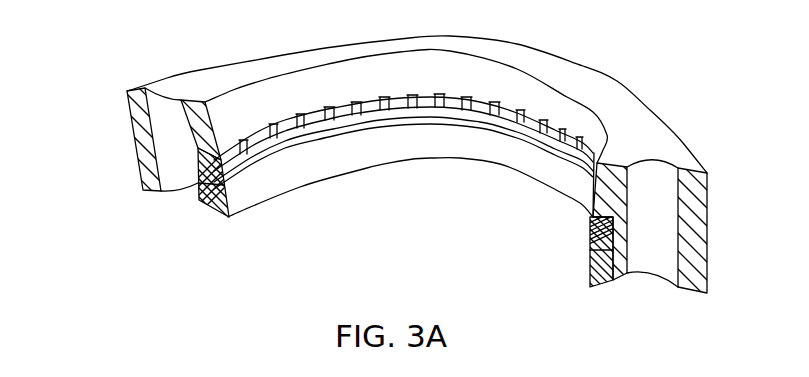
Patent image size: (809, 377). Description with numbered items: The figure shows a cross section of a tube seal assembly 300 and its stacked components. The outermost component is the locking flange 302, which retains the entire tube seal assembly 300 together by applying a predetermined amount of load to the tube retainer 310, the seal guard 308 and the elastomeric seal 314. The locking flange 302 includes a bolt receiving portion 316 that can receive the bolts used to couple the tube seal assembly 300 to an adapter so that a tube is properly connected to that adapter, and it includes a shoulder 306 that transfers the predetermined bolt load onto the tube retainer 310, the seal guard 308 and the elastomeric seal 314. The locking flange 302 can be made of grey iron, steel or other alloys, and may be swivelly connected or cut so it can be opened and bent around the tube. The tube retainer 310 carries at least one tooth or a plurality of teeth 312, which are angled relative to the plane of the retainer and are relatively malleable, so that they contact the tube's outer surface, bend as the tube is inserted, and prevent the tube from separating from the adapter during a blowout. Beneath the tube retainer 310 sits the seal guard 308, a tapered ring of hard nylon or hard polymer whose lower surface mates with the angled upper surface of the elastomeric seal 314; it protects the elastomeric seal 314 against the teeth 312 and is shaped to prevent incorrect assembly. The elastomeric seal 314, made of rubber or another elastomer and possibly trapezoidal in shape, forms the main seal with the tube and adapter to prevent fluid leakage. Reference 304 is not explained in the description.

The tube seal assembly 300 is at (132, 63).
The locking flange 302 is at (615, 80).
The first end section 304 is at (182, 100).
The shoulder 306 is at (198, 180).
The seal guard 308 is at (288, 142).
The tube retainer 310 is at (425, 110).
The teeth 312 is at (505, 120).
The elastomeric seal 314 is at (543, 183).
The bolt receiving portion 316 is at (653, 207).